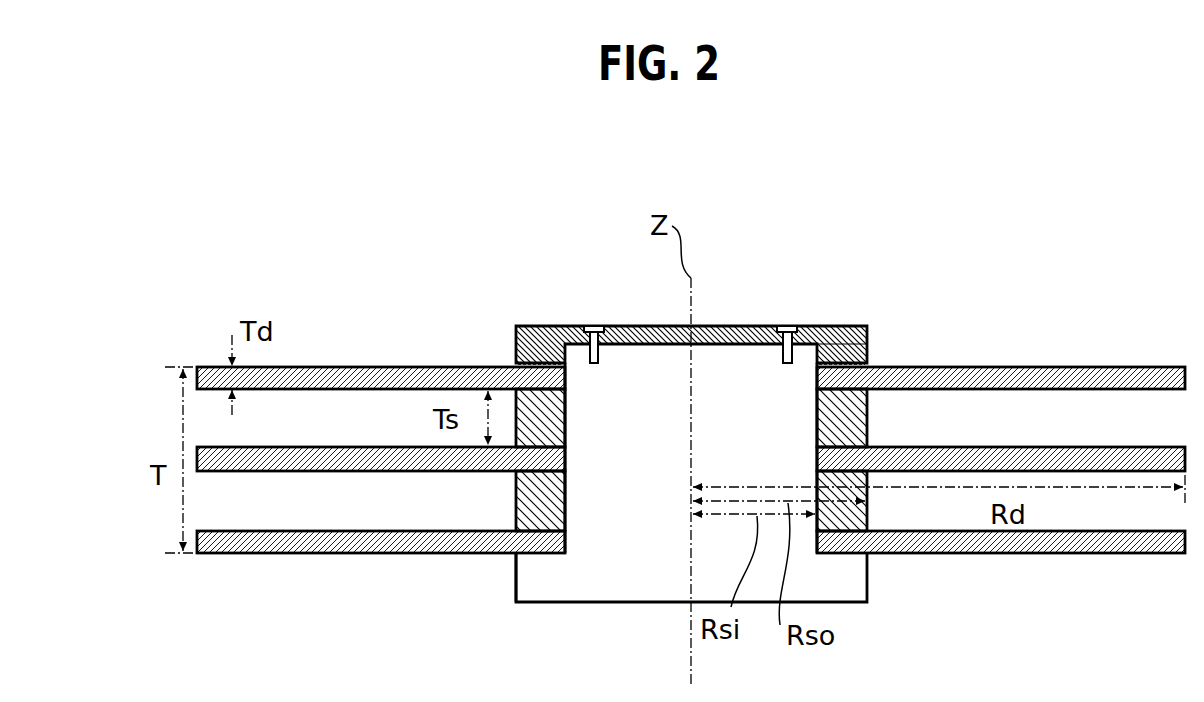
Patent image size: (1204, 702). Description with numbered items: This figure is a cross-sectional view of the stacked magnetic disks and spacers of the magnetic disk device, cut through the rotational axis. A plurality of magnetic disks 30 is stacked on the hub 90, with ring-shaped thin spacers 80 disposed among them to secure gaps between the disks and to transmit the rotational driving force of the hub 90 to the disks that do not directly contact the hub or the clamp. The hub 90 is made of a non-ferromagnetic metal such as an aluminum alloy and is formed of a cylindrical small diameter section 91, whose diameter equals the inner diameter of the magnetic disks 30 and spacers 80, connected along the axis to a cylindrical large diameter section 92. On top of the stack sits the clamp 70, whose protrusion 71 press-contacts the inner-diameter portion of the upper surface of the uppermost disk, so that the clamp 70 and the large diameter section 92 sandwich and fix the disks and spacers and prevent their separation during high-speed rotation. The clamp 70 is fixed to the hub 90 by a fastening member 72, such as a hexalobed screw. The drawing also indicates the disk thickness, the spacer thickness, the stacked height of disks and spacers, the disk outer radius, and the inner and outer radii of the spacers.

The magnetic disk 30 is at (392, 367).
The clamp 70 is at (553, 326).
The protrusion 71 is at (867, 364).
The fastening member 72 is at (790, 325).
The spacer 80 is at (867, 428).
The hub 90 is at (632, 603).
The small diameter section 91 is at (540, 412).
The large diameter section 92 is at (516, 582).